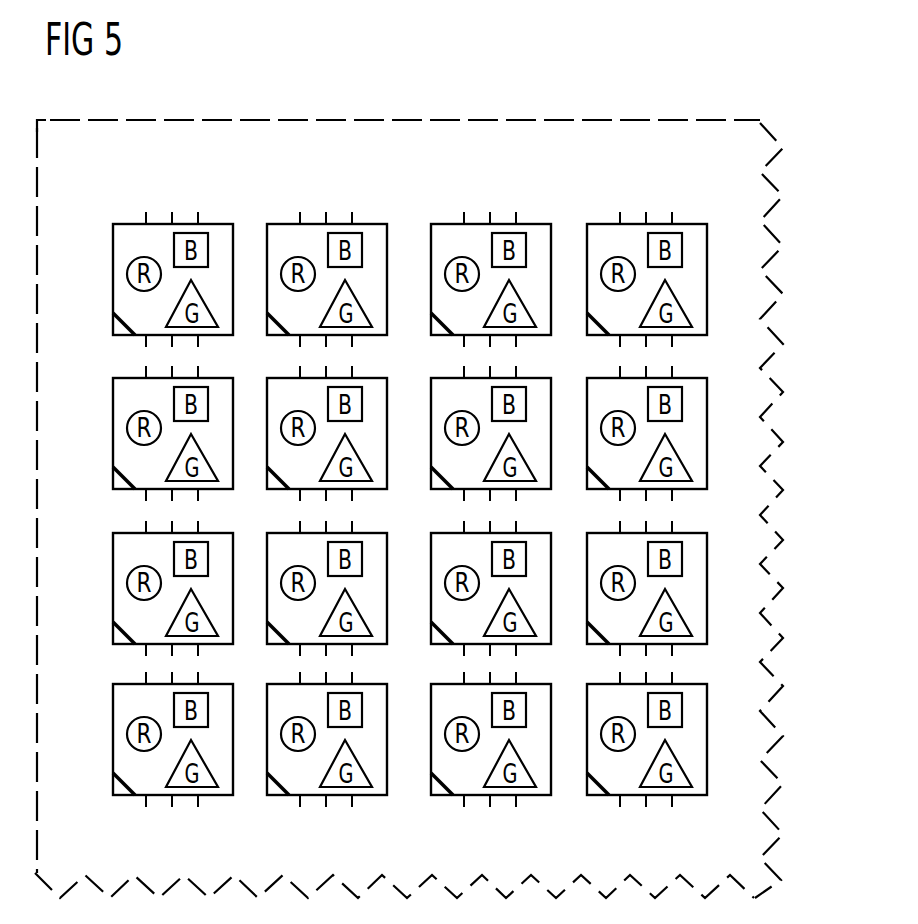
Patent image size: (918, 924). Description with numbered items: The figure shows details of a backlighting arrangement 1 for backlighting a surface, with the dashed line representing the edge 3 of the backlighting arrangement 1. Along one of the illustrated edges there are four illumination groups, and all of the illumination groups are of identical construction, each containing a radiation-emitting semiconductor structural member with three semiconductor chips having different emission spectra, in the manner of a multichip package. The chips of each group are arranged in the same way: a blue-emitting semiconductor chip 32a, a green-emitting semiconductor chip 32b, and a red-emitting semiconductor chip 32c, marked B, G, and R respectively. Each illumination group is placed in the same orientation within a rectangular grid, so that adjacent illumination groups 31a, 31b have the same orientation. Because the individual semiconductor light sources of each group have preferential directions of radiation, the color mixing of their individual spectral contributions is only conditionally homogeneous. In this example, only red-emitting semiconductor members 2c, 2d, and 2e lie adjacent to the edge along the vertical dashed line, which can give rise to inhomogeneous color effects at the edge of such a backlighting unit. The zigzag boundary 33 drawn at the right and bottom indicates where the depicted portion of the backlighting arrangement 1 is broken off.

The backlighting arrangement 1 is at (740, 115).
The edge 3 is at (372, 120).
The red-emitting semiconductor member 2c is at (127, 274).
The red-emitting semiconductor member 2d is at (127, 428).
The red-emitting semiconductor member 2e is at (127, 583).
The illumination group 31a is at (660, 224).
The illumination group 31b is at (587, 437).
The blue-emitting semiconductor chip 32a is at (683, 558).
The green-emitting semiconductor chip 32b is at (678, 608).
The red-emitting semiconductor chip 32c is at (605, 574).
The cut edge 33 is at (782, 588).